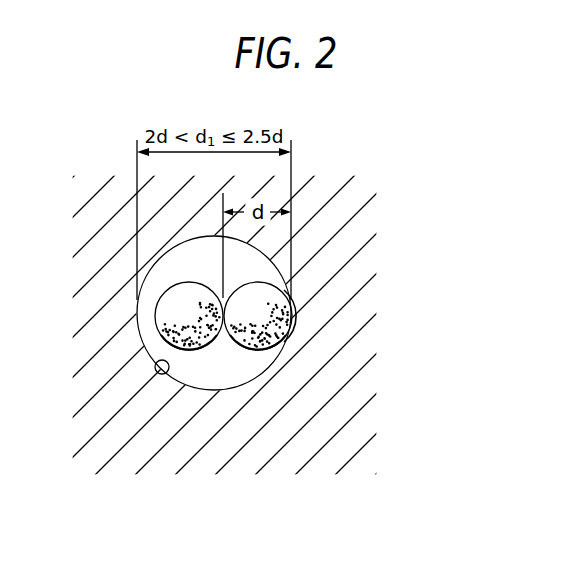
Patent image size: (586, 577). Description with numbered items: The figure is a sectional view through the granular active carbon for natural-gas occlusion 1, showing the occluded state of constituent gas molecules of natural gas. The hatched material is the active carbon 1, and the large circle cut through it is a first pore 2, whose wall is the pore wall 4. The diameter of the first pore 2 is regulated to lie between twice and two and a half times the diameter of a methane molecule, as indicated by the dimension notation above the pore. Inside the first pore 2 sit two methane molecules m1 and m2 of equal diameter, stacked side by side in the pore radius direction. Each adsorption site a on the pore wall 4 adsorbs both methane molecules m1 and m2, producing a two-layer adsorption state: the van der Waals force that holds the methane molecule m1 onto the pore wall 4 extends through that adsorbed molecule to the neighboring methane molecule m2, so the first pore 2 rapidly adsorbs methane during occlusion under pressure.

The granular active carbon for natural-gas occlusion 1 is at (388, 239).
The first pore 2 is at (143, 342).
The pore wall 4 is at (157, 374).
The adsorption site a is at (293, 313).
The methane molecule m1 is at (258, 350).
The methane molecule m2 is at (190, 350).